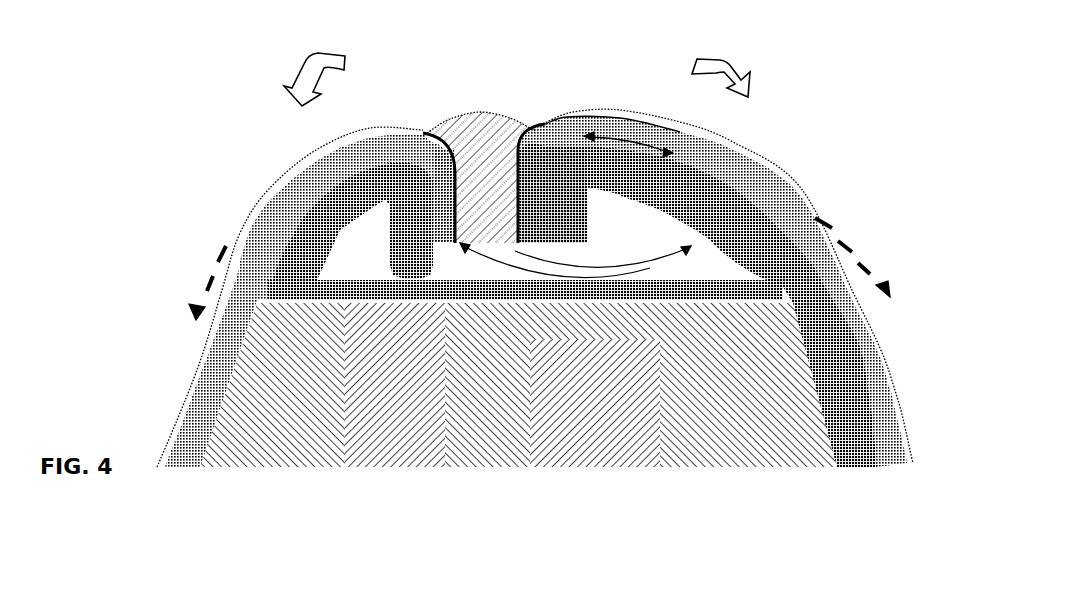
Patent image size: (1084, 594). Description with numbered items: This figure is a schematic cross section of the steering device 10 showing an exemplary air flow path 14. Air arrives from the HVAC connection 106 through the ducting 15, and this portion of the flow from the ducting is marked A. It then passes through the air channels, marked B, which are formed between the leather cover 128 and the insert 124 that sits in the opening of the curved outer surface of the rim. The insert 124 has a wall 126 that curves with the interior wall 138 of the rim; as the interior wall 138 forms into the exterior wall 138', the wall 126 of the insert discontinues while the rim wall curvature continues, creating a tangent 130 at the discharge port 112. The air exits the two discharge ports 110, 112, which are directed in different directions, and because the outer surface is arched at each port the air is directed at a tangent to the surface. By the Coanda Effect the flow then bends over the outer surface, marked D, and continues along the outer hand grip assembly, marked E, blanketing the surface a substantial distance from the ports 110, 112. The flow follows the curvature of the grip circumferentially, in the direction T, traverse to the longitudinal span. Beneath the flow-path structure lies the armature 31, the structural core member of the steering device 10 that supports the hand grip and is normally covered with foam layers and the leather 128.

The steering device 10 is at (197, 188).
The air flow path 14 is at (300, 170).
The ducting 15 is at (677, 230).
The armature 31 is at (540, 447).
The HVAC connection 106 is at (437, 212).
The discharge port 110 is at (533, 123).
The discharge port 112 is at (426, 138).
The insert 124 is at (470, 110).
The wall of the insert 126 is at (550, 117).
The leather cover 128 is at (885, 362).
The tangent 130 is at (397, 145).
The interior wall of the rim 138 is at (442, 336).
The exterior wall of the rim 138' is at (325, 340).
The air flow from the ducting A is at (637, 268).
The air flow through the air channels B is at (523, 203).
The air flow bending over the outer surface D is at (312, 56).
The air flow along the outer hand grip assembly E is at (546, 269).
The circumferential direction T is at (628, 120).